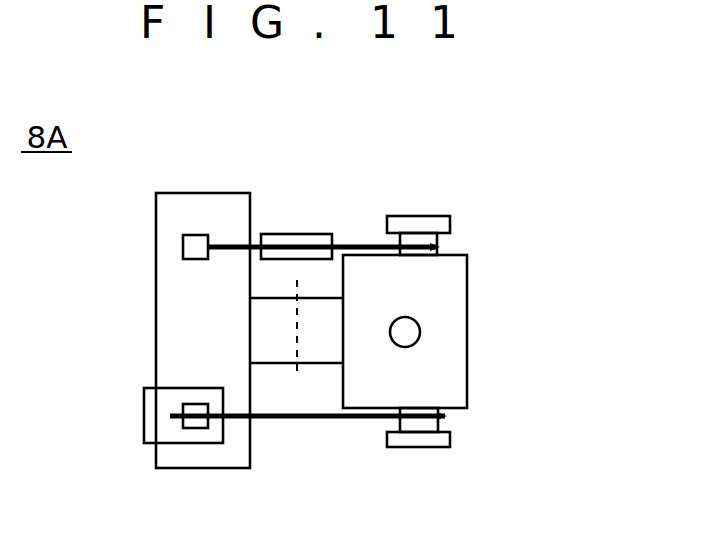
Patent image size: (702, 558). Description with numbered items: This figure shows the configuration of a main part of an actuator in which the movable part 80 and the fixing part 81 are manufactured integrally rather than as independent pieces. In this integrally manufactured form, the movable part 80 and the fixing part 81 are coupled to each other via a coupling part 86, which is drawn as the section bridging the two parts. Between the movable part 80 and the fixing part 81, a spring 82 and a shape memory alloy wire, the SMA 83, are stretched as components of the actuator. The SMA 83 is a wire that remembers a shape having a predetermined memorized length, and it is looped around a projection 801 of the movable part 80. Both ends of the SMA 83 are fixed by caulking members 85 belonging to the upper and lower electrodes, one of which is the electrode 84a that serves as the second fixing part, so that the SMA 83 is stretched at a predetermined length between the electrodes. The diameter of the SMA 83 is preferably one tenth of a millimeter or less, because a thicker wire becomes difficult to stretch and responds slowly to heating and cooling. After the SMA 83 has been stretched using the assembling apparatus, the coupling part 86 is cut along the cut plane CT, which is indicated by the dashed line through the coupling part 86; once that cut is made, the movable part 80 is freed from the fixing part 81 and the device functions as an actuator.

The movable part 80 is at (468, 368).
The projection 801 is at (419, 216).
The fixing part 81 is at (207, 193).
The spring 82 is at (297, 234).
The shape memory alloy (SMA) 83 is at (360, 419).
The electrode 84a is at (144, 418).
The caulking member 85 is at (193, 430).
The coupling part 86 is at (280, 367).
The cut plane CT is at (297, 336).